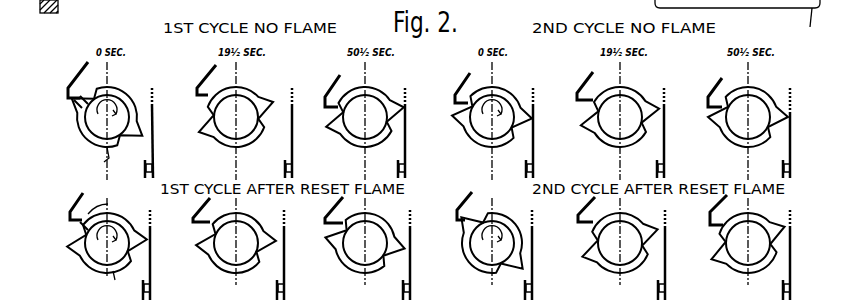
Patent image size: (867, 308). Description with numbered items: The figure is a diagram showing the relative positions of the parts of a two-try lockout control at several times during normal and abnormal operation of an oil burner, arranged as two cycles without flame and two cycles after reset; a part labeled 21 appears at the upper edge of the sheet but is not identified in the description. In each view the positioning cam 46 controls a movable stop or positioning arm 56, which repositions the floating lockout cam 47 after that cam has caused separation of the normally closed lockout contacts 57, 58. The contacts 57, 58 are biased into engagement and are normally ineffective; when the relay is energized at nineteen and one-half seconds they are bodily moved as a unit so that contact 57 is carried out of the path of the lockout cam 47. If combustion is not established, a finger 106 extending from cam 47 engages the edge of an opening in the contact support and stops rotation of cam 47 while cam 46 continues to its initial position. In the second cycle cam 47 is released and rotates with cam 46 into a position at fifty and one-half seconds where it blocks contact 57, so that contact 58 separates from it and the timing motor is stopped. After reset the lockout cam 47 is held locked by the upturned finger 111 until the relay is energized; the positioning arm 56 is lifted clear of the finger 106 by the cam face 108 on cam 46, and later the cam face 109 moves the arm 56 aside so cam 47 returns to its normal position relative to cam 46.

The housing 21 is at (737, 20).
The positioning cam 46 is at (83, 140).
The floating lockout cam 47 is at (113, 100).
The positioning arm 56 is at (69, 83).
The lockout contact 57 is at (154, 148).
The lockout contact 58 is at (143, 167).
The finger 106 is at (78, 90).
The cam face 108 is at (107, 160).
The cam face 109 is at (86, 210).
The upturned finger 111 is at (153, 104).